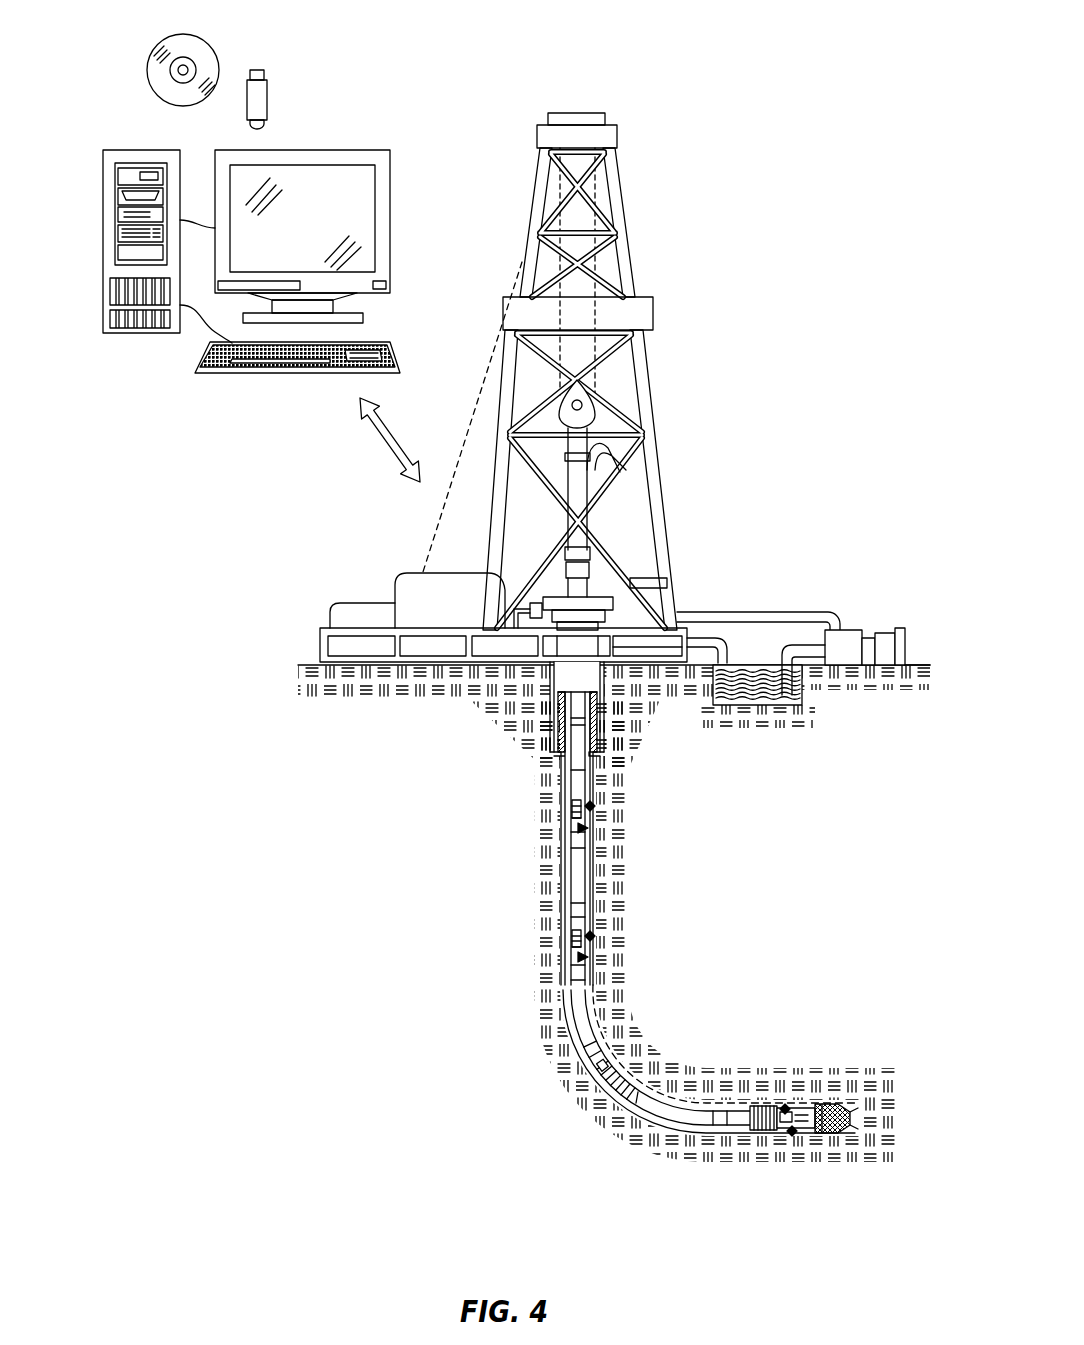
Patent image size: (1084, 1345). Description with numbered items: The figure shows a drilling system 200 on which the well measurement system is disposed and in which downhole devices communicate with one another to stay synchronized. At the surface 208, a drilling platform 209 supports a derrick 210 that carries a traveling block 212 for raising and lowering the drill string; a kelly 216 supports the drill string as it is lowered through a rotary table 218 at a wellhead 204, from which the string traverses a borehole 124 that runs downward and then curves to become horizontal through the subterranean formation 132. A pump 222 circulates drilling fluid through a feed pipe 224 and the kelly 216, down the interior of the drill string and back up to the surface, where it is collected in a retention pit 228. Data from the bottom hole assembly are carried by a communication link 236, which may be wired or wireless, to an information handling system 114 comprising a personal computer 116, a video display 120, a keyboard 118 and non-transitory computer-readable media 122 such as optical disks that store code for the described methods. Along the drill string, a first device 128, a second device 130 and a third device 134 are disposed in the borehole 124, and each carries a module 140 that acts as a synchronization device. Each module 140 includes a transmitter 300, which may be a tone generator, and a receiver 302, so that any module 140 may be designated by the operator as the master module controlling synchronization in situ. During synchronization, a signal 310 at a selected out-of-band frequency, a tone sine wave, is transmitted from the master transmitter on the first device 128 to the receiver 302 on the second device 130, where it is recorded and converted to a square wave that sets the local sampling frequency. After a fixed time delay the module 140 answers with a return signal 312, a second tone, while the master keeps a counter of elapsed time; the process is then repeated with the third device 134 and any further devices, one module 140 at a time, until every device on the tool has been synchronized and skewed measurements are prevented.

The information handling system 114 is at (126, 411).
The personal computer 116 is at (140, 150).
The keyboard 118 is at (402, 362).
The video display 120 is at (340, 150).
The non-transitory computer-readable media 122 is at (254, 70).
The borehole 124 is at (593, 878).
The first device 128 is at (807, 1133).
The second device 130 is at (620, 1062).
The subterranean formation 132 is at (588, 957).
The third device 134 is at (588, 828).
The module 140 is at (597, 807).
The drilling system 200 is at (812, 206).
The wellhead 204 is at (613, 616).
The surface 208 is at (918, 665).
The drilling platform 209 is at (320, 650).
The derrick 210 is at (630, 247).
The traveling block 212 is at (593, 417).
The kelly 216 is at (578, 480).
The rotary table 218 is at (608, 597).
The pump 222 is at (848, 630).
The feed pipe 224 is at (778, 612).
The retention pit 228 is at (753, 687).
The communication link 236 is at (380, 450).
The transmitter 300 is at (572, 808).
The receiver 302 is at (578, 817).
The signal 310 is at (750, 1108).
The return signal 312 is at (648, 1103).